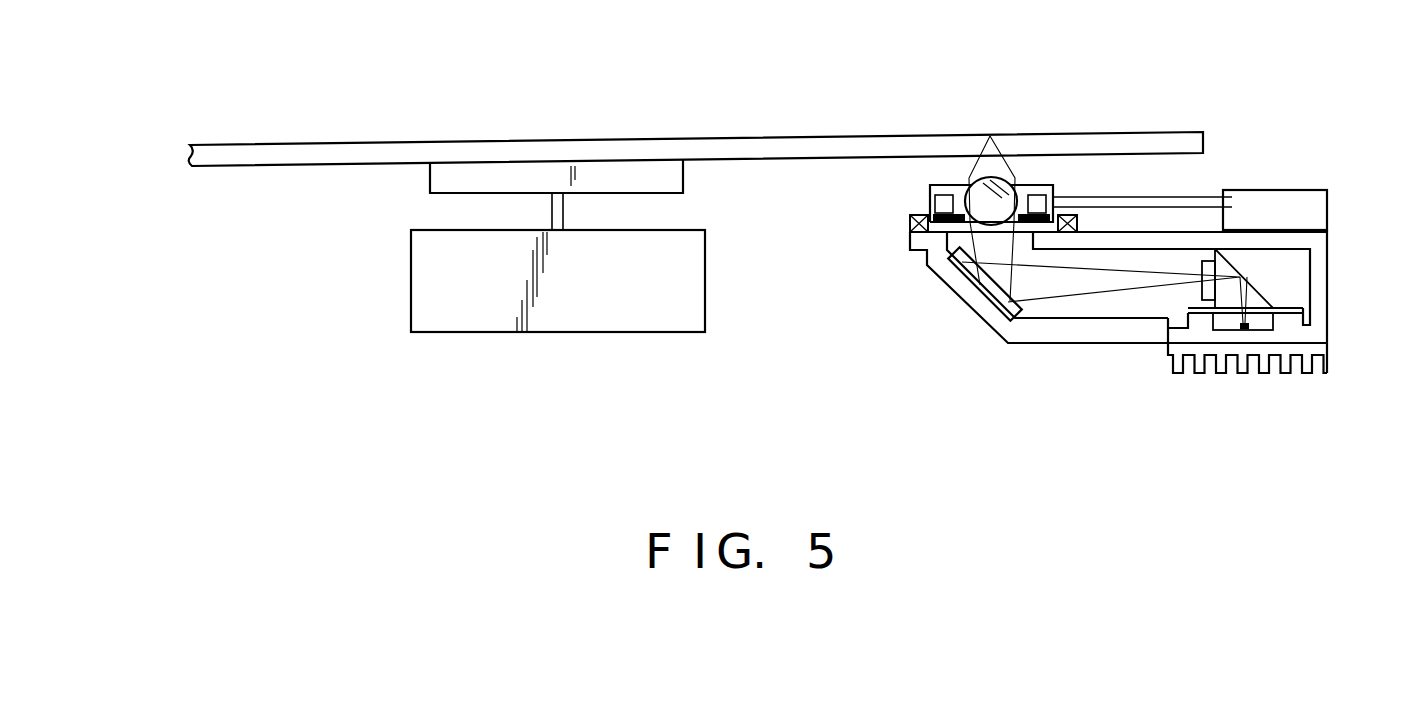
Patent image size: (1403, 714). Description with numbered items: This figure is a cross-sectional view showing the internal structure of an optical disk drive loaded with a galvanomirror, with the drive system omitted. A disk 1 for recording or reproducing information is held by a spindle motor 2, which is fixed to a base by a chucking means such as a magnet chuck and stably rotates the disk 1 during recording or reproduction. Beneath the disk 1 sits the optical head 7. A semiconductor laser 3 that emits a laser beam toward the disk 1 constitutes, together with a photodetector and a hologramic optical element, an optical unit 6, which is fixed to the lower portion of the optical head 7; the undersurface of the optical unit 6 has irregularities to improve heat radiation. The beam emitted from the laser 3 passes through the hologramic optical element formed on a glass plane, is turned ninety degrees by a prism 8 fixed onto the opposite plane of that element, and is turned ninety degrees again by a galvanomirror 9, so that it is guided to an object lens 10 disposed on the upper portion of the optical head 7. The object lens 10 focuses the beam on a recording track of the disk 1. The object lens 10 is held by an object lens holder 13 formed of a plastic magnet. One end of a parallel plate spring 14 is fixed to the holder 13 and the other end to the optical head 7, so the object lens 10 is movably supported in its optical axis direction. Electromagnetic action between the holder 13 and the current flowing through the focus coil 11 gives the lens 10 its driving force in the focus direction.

The disk 1 is at (346, 148).
The spindle motor 2 is at (571, 316).
The semiconductor laser 3 is at (1245, 328).
The optical unit 6 is at (1200, 378).
The optical head 7 is at (1067, 347).
The prism 8 is at (1258, 303).
The galvanomirror 9 is at (982, 282).
The object lens 10 is at (1023, 187).
The focus coil 11 is at (910, 224).
The object lens holder 13 is at (937, 203).
The parallel plate spring 14 is at (1180, 195).